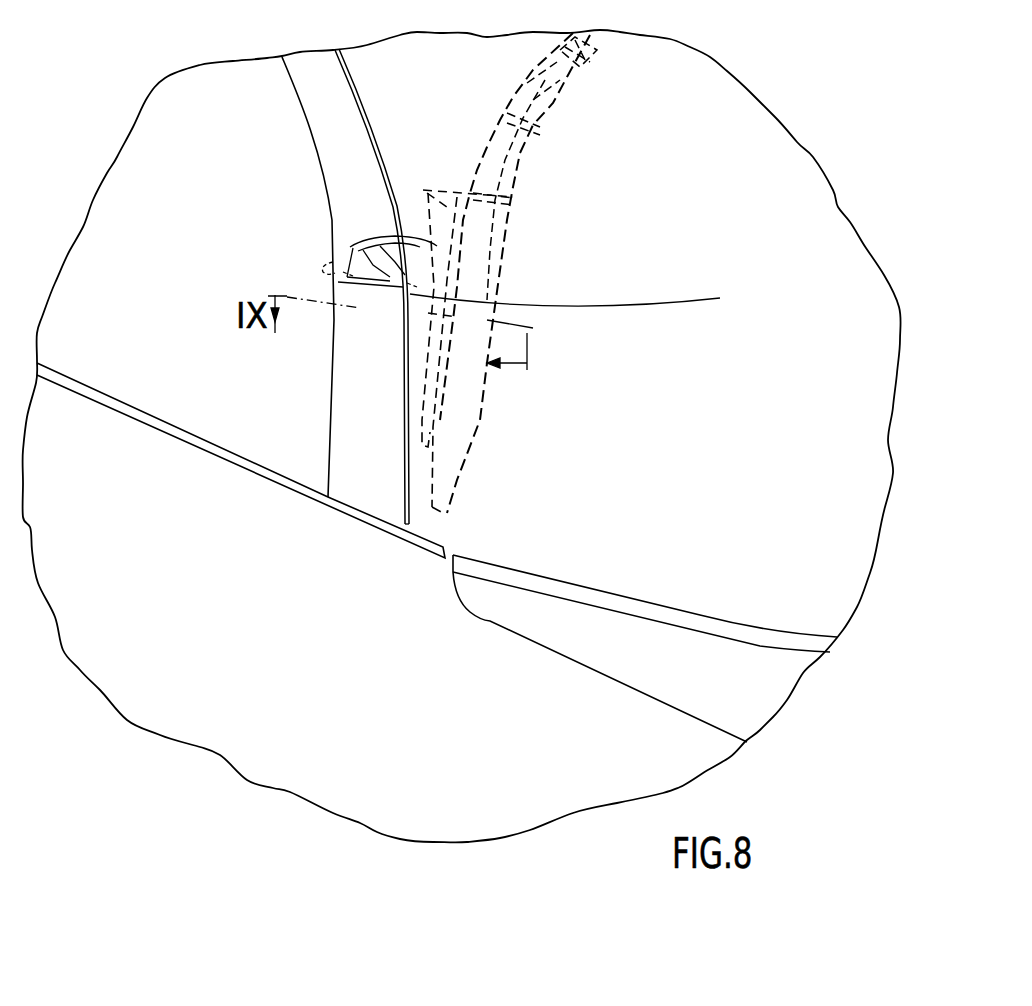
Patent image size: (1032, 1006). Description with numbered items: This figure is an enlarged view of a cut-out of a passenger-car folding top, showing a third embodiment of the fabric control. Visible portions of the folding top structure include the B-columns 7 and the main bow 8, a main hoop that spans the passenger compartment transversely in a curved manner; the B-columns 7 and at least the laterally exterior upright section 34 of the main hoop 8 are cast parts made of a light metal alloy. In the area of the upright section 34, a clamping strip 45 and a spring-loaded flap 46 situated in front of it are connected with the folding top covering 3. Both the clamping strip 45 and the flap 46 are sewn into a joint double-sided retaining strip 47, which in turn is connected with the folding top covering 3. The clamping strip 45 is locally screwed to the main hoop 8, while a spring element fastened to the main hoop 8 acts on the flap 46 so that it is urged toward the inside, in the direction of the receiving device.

The folding top covering 3 is at (738, 547).
The B-columns 7 is at (350, 392).
The main bow 8 is at (582, 73).
The upright section 34 is at (533, 364).
The clamping strip 45 is at (467, 427).
The spring-loaded flap 46 is at (423, 185).
The double-sided retaining strip 47 is at (350, 246).